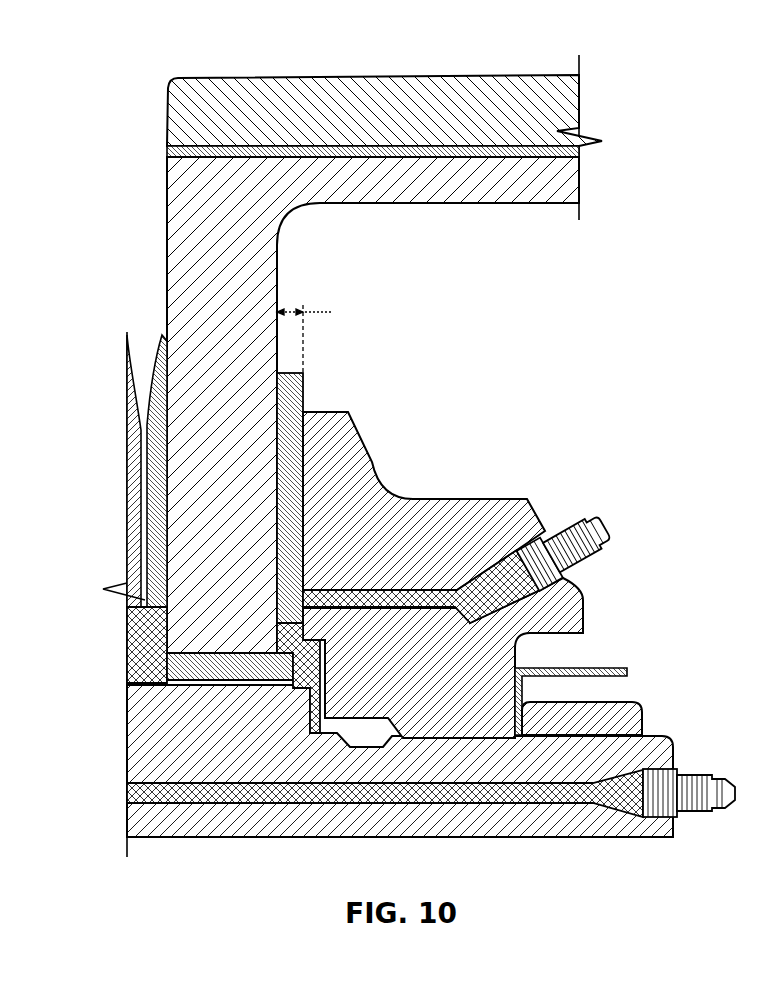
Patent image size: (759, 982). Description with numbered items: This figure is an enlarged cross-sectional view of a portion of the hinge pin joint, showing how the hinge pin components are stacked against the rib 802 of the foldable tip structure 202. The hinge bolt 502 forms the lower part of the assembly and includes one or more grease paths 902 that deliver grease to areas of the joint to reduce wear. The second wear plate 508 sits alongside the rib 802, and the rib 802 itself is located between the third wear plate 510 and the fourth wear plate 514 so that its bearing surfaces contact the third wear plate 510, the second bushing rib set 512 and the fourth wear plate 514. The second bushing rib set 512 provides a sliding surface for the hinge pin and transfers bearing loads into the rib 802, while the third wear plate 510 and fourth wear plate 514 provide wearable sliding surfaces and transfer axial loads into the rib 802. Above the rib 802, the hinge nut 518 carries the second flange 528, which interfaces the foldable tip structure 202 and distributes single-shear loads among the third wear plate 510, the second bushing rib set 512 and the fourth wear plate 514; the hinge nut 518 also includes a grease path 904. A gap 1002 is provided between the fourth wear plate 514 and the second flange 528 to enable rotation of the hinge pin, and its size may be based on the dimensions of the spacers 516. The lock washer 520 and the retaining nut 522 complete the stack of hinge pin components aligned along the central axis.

The foldable tip structure 202 is at (527, 75).
The rib 802 is at (240, 230).
The gap 1002 is at (333, 312).
The fourth wear plate 514 is at (302, 392).
The second flange 528 is at (325, 442).
The hinge nut 518 is at (337, 500).
The grease path 904 is at (403, 597).
The third wear plate 510 is at (157, 420).
The second wear plate 508 is at (135, 487).
The second bushing rib set 512 is at (203, 667).
The hinge bolt 502 is at (155, 715).
The spacer 516 is at (308, 707).
The grease path 902 is at (510, 787).
The lock washer 520 is at (600, 668).
The retaining nut 522 is at (632, 723).